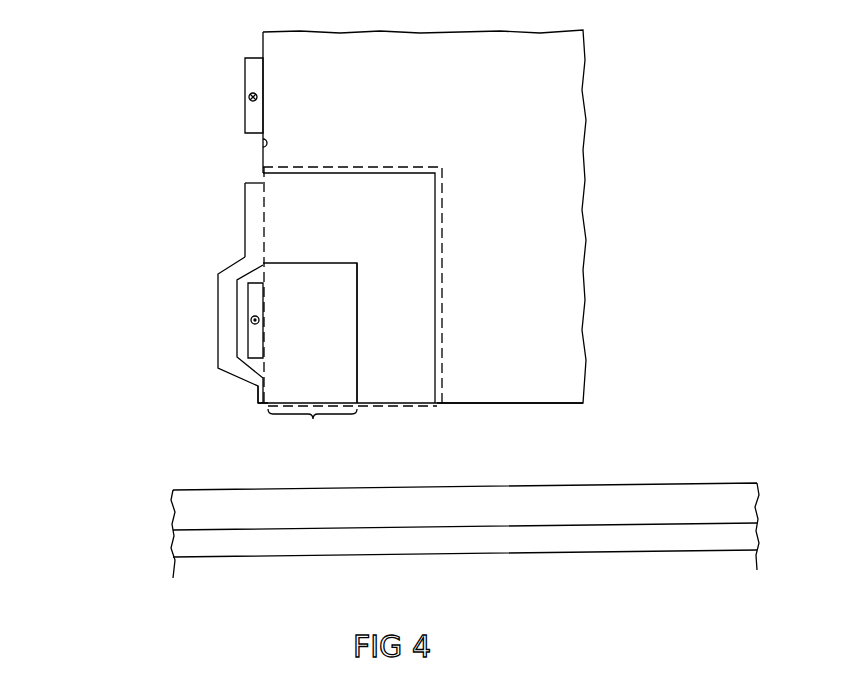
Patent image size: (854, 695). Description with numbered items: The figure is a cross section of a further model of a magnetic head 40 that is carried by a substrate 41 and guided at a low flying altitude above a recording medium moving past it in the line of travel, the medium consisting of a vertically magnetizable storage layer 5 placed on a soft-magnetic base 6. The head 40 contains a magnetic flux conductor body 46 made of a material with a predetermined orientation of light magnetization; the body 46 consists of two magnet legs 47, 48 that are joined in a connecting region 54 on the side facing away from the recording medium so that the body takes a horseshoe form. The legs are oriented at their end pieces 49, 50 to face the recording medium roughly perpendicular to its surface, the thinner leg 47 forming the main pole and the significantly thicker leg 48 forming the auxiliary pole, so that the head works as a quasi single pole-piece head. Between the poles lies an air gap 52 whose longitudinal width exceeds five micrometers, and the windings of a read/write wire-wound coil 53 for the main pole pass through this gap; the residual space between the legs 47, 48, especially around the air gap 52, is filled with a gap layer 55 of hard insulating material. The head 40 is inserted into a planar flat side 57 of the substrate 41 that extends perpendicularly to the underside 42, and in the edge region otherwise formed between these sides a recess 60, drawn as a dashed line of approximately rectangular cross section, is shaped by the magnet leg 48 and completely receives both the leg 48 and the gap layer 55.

The substrate 41 is at (422, 216).
The underside 42 is at (491, 405).
The magnet leg 48 is at (349, 288).
The gap layer 55 is at (310, 333).
The end piece 50 is at (357, 384).
The read/write wire-wound coil 53 is at (250, 105).
The planar flat side 57 is at (262, 144).
The magnetic flux conductor body 46 is at (244, 186).
The connecting region 54 is at (262, 220).
The magnet leg 47 is at (218, 346).
The magnetic head 40 is at (215, 290).
The end piece 49 is at (257, 398).
The air gap 52 is at (312, 426).
The recess 60 is at (345, 166).
The storage layer 5 is at (746, 503).
The soft-magnetic base 6 is at (746, 536).